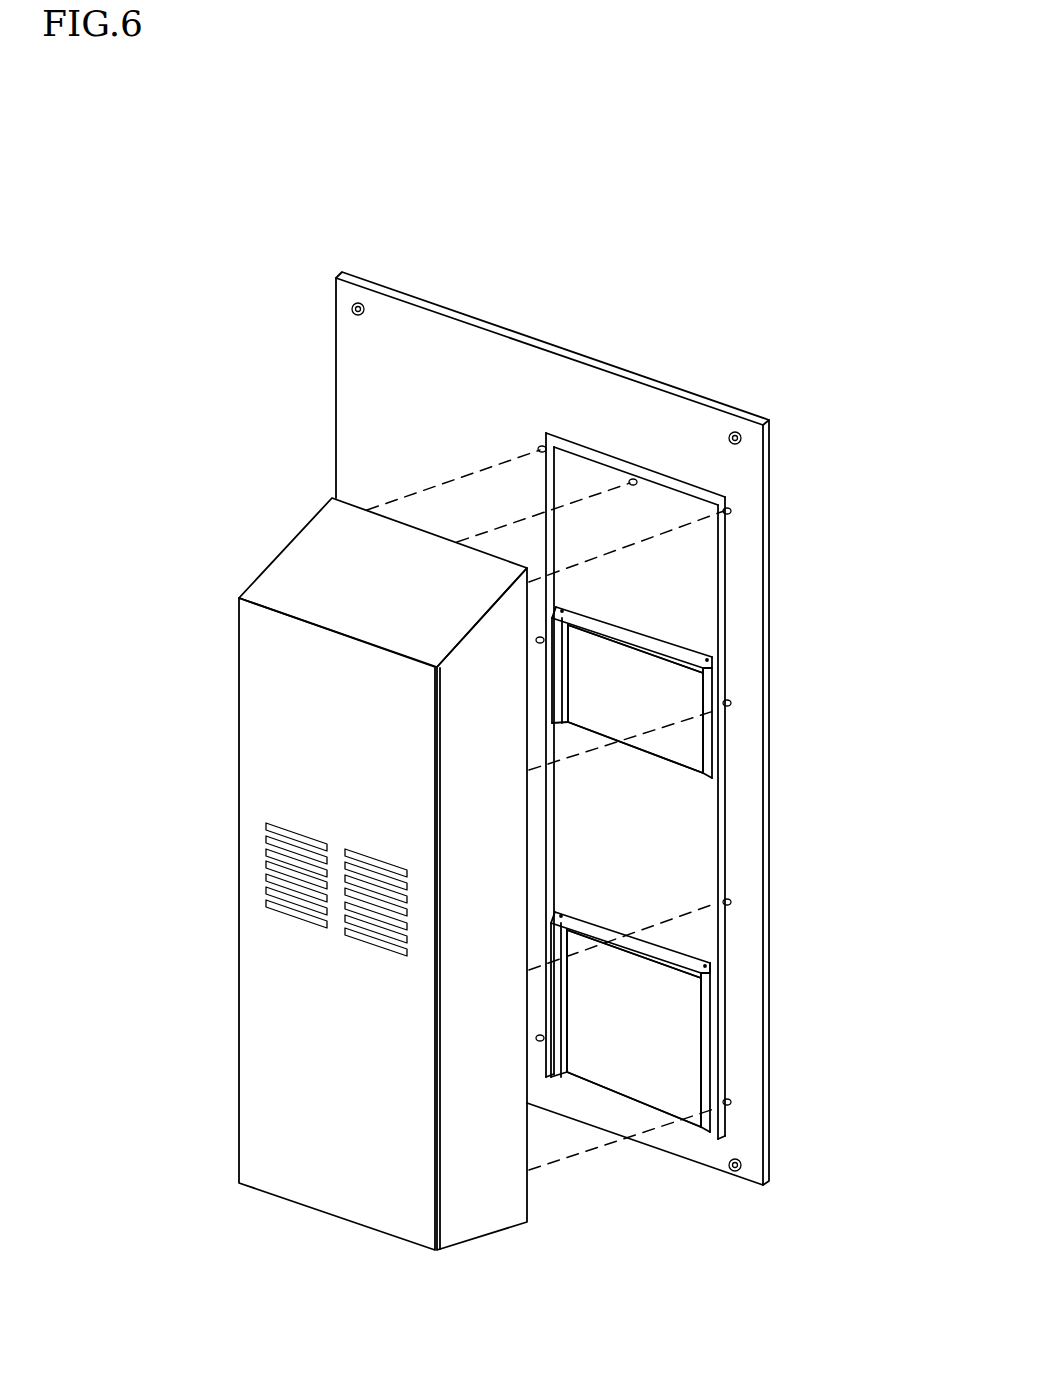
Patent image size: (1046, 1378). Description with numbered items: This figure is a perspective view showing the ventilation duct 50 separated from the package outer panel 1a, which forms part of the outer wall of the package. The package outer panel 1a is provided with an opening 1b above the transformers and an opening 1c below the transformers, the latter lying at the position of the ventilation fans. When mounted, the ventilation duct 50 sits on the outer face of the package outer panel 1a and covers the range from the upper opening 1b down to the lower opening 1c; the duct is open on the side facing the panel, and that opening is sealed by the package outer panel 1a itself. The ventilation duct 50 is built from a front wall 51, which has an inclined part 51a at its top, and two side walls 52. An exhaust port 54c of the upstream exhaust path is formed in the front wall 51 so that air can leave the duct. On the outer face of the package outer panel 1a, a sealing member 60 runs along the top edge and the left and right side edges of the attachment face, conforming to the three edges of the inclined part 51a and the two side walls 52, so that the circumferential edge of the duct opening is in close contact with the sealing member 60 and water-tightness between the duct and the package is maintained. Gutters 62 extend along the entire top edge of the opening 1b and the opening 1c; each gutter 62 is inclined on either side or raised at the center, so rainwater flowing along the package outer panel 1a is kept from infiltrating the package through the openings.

The package outer panel 1a is at (467, 350).
The opening above the transformers 1b is at (687, 693).
The opening below the transformers 1c is at (685, 1000).
The sealing member 60 is at (670, 482).
The gutter 62 is at (673, 660).
The ventilation duct 50 is at (331, 919).
The front wall 51 is at (270, 722).
The inclined part 51a is at (320, 560).
The side wall 52 is at (485, 1212).
The exhaust port 54c is at (275, 879).